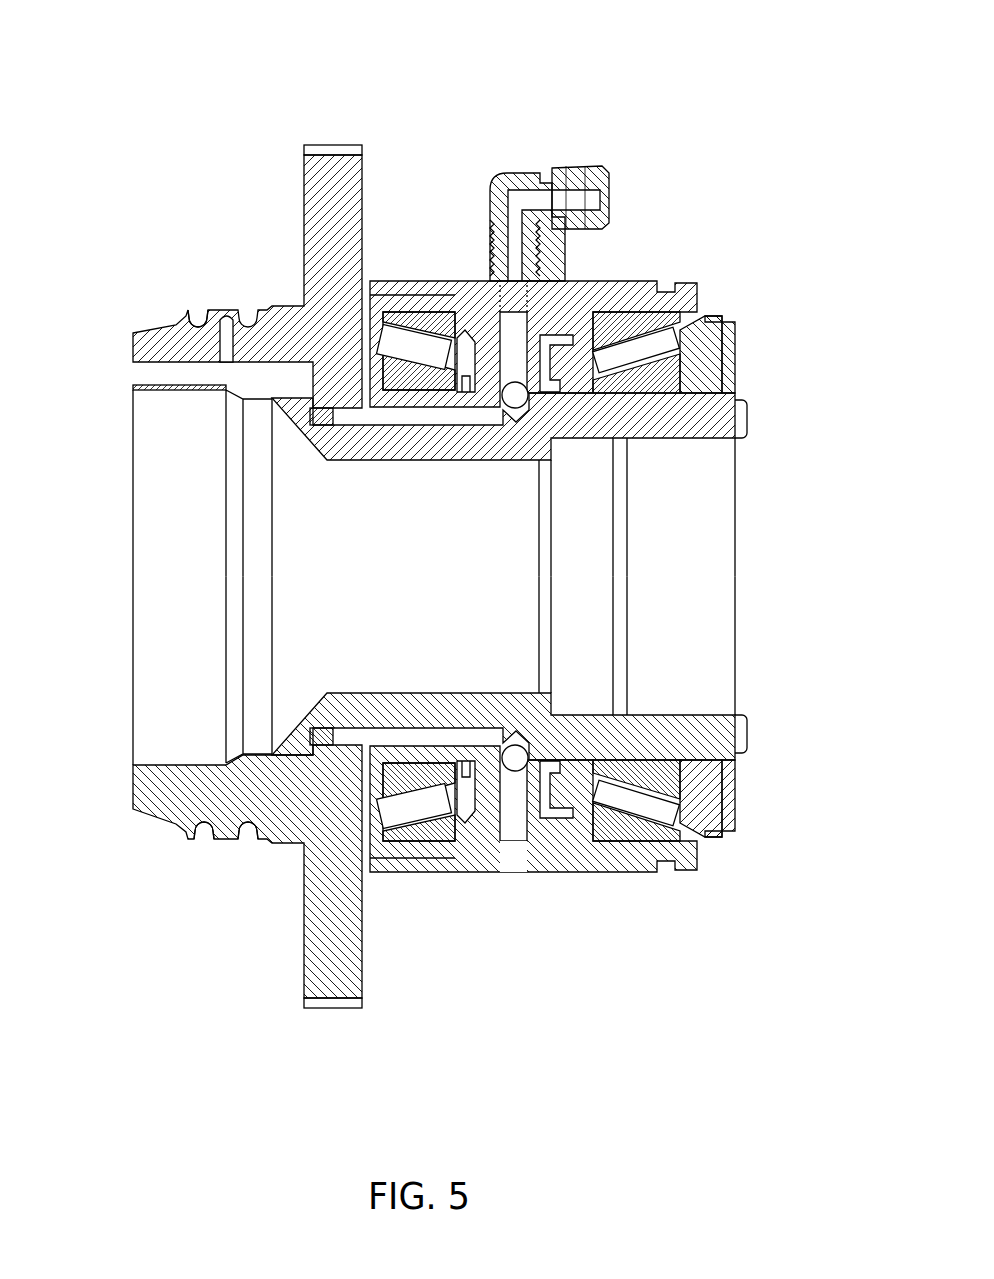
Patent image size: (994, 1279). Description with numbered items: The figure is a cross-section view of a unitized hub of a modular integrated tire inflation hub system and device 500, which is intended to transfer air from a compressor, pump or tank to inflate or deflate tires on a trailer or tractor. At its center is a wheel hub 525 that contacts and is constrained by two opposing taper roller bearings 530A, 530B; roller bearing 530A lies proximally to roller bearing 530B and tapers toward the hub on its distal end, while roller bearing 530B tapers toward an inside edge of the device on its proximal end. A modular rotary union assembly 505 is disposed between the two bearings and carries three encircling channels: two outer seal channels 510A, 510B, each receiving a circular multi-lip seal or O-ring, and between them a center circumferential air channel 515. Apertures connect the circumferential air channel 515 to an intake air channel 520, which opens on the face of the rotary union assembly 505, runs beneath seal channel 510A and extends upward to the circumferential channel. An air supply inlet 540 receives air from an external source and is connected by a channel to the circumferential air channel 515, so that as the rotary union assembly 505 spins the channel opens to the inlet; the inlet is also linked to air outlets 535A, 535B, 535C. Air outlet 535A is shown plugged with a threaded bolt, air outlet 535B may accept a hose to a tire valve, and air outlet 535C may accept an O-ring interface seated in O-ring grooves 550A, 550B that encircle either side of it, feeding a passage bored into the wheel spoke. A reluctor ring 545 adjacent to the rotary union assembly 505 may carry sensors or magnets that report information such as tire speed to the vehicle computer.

The hub system and device 500 is at (645, 86).
The modular rotary union assembly 505 is at (515, 813).
The seal channel 510A is at (553, 385).
The seal channel 510B is at (470, 366).
The circumferential air channel 515 is at (512, 372).
The intake air channel 520 is at (507, 418).
The wheel hub 525 is at (133, 565).
The taper roller bearing 530A is at (420, 807).
The taper roller bearing 530B is at (647, 807).
The air outlet 535A is at (305, 415).
The air outlet 535B is at (150, 378).
The air outlet 535C is at (210, 340).
The air supply inlet 540 is at (593, 195).
The reluctor ring 545 is at (600, 358).
The O-ring groove 550A is at (203, 844).
The O-ring groove 550B is at (248, 844).